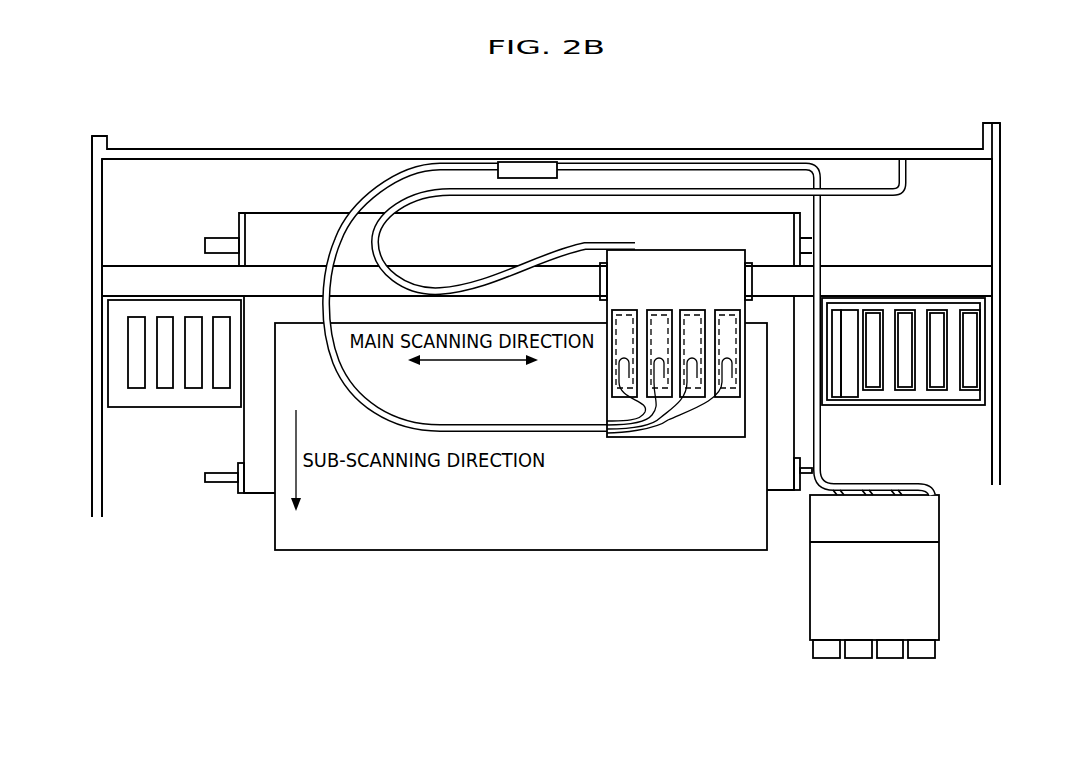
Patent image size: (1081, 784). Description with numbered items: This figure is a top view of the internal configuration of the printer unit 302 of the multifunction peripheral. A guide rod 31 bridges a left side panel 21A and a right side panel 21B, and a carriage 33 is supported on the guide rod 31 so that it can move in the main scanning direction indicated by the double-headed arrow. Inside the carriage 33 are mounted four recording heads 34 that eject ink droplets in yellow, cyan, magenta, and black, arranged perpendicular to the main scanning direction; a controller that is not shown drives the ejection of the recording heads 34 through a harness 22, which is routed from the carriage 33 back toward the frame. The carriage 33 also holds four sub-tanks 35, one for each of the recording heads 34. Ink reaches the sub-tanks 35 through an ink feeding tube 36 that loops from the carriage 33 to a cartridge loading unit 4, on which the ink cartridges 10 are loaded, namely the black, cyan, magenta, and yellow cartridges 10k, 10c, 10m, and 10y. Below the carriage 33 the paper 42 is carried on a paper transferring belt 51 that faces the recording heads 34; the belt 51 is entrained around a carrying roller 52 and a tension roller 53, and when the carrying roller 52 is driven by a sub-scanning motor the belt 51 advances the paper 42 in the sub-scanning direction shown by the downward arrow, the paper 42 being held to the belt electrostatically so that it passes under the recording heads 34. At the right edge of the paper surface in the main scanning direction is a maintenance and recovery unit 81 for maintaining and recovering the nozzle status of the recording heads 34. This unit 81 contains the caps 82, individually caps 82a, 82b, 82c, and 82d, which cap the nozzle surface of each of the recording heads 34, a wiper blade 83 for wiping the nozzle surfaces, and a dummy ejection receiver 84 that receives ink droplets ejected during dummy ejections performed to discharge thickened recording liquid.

The printer unit 302 is at (128, 108).
The left side panel 21A is at (92, 197).
The right side panel 21B is at (1000, 197).
The harness 22 is at (683, 193).
The guide rod 31 is at (157, 273).
The carriage 33 is at (676, 370).
The recording heads 34 is at (626, 310).
The sub-tanks 35 is at (618, 402).
The ink feeding tube 36 is at (366, 196).
The paper 42 is at (436, 535).
The cartridge loading unit 4 is at (953, 572).
The paper transferring belt 51 is at (284, 218).
The carrying roller 52 is at (802, 219).
The tension roller 53 is at (236, 487).
The maintenance and recovery unit 81 is at (939, 355).
The caps 82 is at (918, 392).
The cap 82a is at (873, 392).
The cap 82b is at (905, 392).
The cap 82c is at (937, 392).
The cap 82d is at (975, 375).
The wiper blade 83 is at (836, 310).
The dummy ejection receiver 84 is at (848, 318).
The ink cartridges 10 is at (875, 697).
The black ink cartridge 10k is at (826, 659).
The cyan ink cartridge 10c is at (858, 659).
The magenta ink cartridge 10m is at (890, 659).
The yellow ink cartridge 10y is at (923, 681).